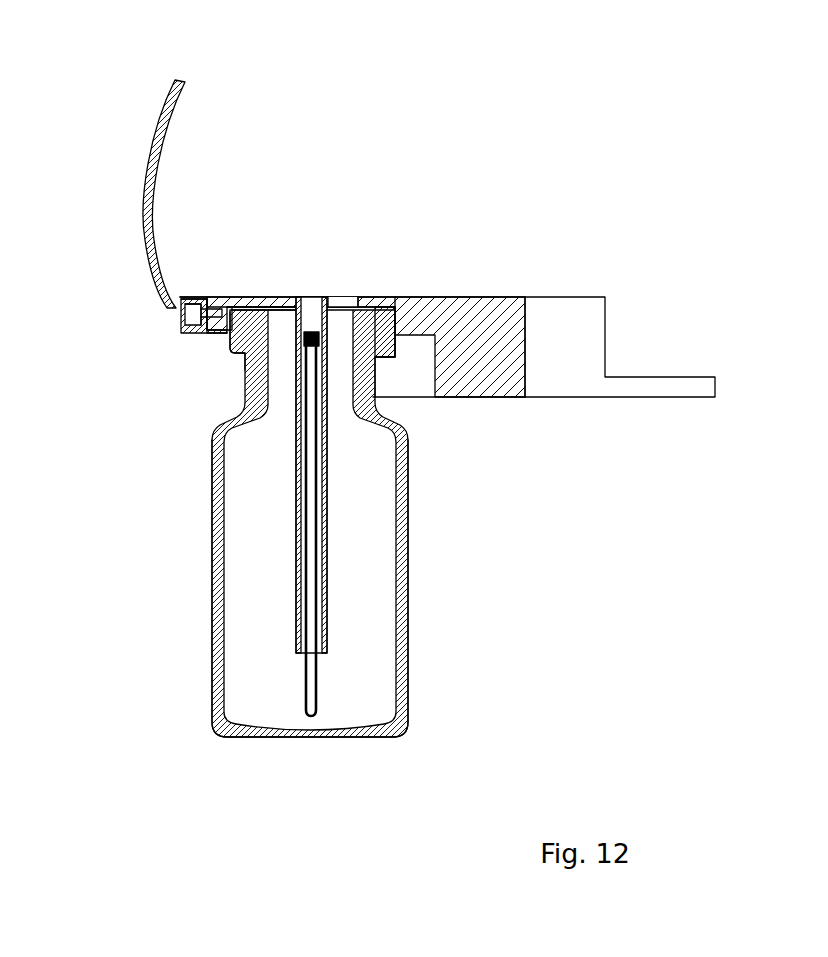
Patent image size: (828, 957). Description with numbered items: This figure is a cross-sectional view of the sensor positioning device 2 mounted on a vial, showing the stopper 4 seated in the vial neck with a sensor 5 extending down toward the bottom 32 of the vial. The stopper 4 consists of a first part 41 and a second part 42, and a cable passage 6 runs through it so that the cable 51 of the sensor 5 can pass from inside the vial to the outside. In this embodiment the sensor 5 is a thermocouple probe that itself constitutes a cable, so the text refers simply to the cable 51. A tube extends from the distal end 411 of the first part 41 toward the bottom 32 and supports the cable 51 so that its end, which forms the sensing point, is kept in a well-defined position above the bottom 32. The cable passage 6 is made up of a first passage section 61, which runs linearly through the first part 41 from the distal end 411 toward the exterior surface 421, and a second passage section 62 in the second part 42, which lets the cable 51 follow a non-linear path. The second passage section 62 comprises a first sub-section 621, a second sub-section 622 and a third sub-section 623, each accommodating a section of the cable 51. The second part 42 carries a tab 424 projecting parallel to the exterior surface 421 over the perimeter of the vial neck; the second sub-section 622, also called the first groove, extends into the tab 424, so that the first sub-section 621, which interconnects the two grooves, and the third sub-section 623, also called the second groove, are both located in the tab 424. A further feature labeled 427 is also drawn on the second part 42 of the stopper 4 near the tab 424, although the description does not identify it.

The sensor positioning device 2 is at (460, 165).
The stopper 4 is at (340, 197).
The sensor 5 is at (305, 687).
The cable passage 6 is at (323, 288).
The bottom 32 is at (287, 727).
The first part 41 is at (300, 356).
The second part 42 is at (368, 303).
The cable 51 is at (160, 132).
The first passage section 61 is at (318, 375).
The second passage section 62 is at (312, 302).
The distal end 411 is at (300, 380).
The exterior surface 421 is at (193, 300).
The tab 424 is at (177, 313).
The seal 427 is at (253, 307).
The first sub-section 621 is at (183, 310).
The second sub-section 622 is at (240, 303).
The third sub-section 623 is at (177, 333).